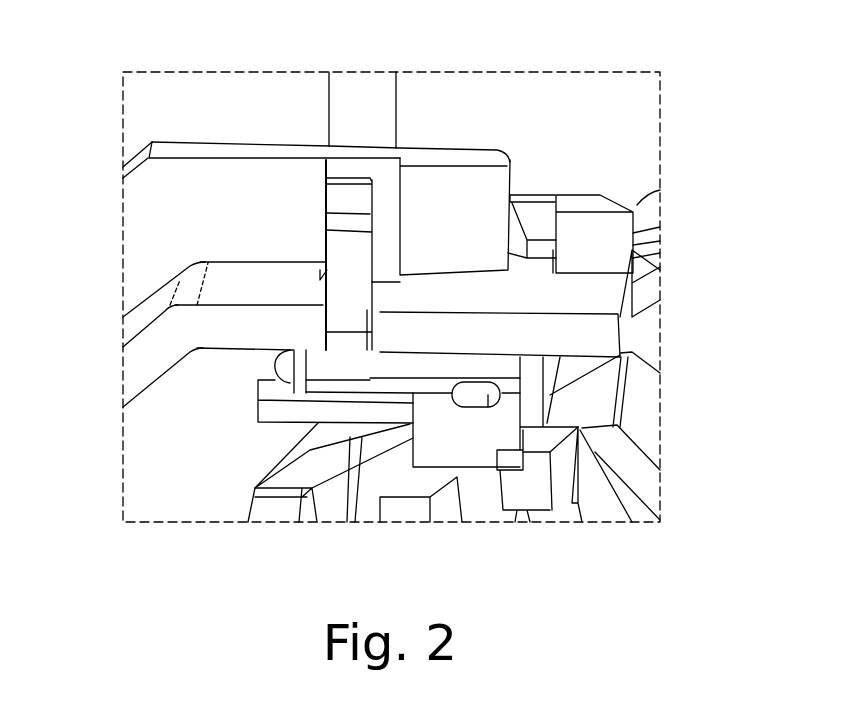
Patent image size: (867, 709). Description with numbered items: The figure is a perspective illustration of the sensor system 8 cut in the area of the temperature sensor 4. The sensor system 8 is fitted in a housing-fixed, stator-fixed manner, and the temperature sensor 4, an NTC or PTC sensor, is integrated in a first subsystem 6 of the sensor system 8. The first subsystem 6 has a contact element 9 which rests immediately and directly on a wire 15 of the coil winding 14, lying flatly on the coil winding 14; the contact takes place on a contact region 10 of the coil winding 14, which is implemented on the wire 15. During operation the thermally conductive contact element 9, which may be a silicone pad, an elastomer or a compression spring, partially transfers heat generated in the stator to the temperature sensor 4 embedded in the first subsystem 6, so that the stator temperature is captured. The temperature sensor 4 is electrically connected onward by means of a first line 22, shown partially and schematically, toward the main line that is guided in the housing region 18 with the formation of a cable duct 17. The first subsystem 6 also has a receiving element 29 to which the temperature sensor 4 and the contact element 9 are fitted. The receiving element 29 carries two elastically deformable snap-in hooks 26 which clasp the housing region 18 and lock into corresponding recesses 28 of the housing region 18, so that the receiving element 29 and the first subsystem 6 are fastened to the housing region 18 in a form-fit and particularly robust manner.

The temperature sensor 4 is at (525, 380).
The first subsystem 6 is at (255, 432).
The sensor system 8 is at (148, 412).
The contact element 9 is at (468, 432).
The contact region 10 is at (537, 438).
The coil winding 14 is at (353, 528).
The wire 15 is at (530, 487).
The cable duct 17 is at (208, 262).
The housing region 18 is at (580, 293).
The first line 22 is at (388, 388).
The snap-in hooks 26 is at (538, 220).
The recesses 28 is at (515, 185).
The receiving element 29 is at (332, 363).